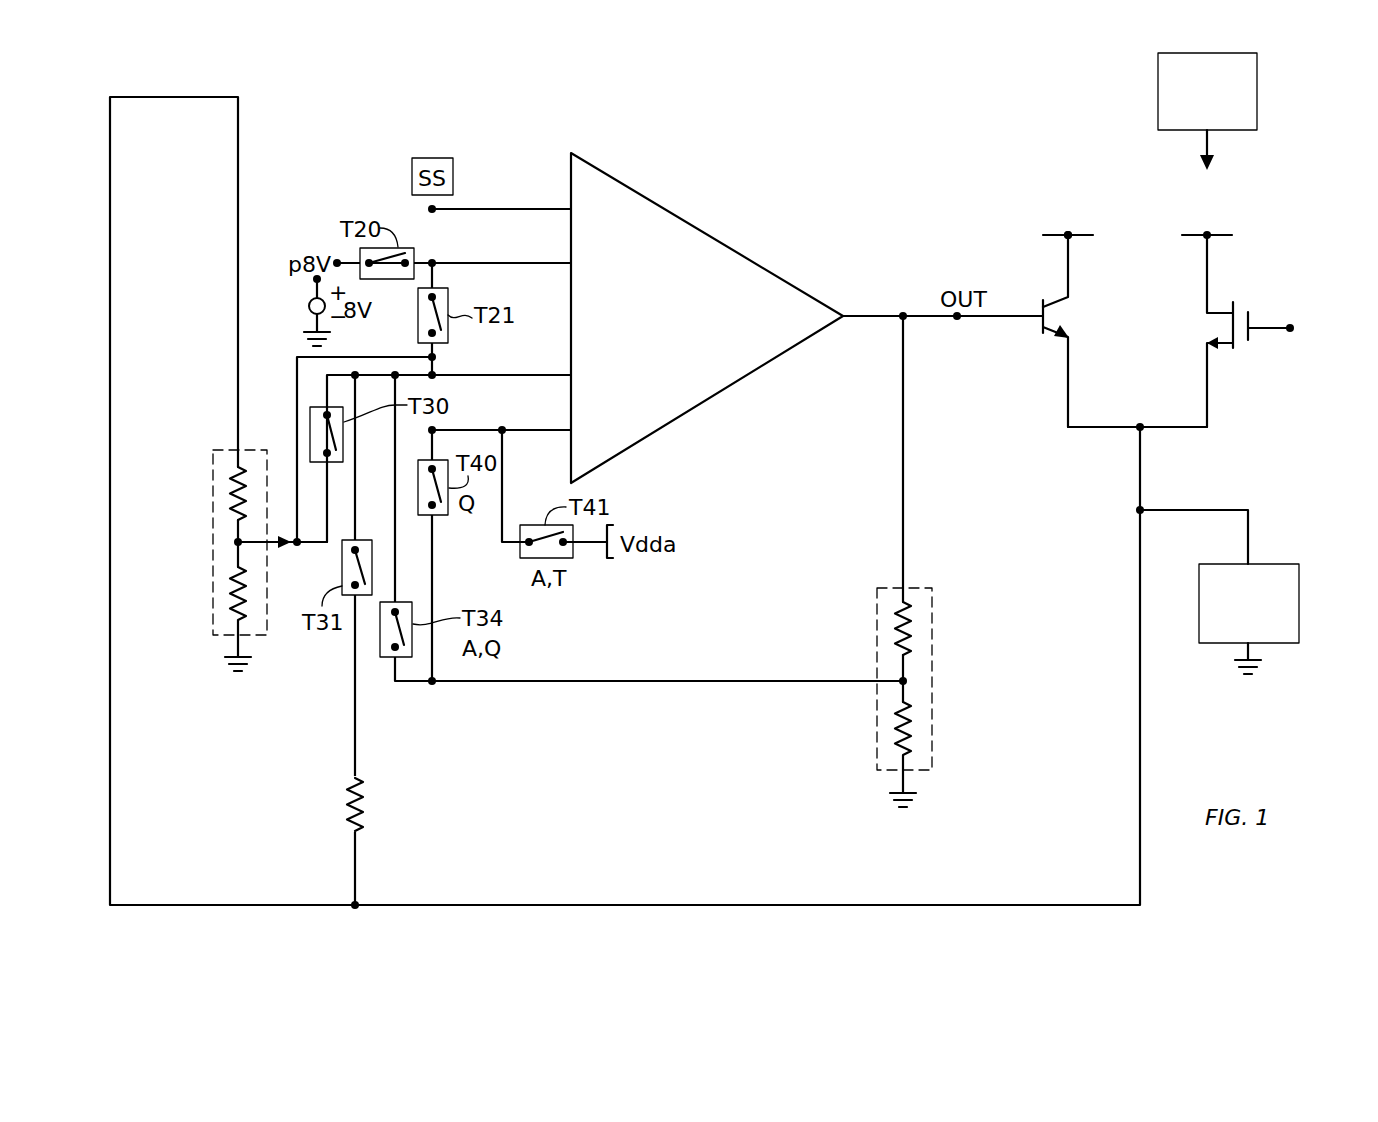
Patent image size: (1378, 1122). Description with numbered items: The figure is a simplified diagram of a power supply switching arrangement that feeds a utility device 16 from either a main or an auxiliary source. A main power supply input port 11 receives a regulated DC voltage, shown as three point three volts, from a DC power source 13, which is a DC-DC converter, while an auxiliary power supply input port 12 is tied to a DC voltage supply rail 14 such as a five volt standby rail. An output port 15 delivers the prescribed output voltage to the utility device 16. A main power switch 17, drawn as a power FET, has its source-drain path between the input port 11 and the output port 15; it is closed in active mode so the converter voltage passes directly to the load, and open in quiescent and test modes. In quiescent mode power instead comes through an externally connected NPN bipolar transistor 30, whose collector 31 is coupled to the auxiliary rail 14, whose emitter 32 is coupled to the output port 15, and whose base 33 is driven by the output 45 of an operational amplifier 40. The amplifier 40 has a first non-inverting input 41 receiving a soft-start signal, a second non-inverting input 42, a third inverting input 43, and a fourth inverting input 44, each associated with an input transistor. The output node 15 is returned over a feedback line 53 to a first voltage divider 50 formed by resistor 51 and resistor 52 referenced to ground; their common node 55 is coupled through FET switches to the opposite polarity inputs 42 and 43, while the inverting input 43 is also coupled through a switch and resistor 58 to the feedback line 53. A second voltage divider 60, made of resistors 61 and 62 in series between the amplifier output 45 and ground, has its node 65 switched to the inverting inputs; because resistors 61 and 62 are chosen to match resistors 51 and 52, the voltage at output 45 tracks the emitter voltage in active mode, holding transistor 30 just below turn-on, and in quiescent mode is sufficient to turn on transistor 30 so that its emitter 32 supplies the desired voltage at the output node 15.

The main power supply input port 11 is at (1215, 237).
The auxiliary power supply input port 12 is at (1061, 238).
The DC power source 13 is at (1258, 118).
The DC voltage supply rail 14 is at (1093, 236).
The output port 15 is at (1138, 433).
The utility device 16 is at (1268, 649).
The main power switch 17 is at (1205, 330).
The NPN bipolar transistor 30 is at (1084, 331).
The collector 31 is at (1070, 276).
The emitter 32 is at (1072, 336).
The base 33 is at (991, 320).
The operational amplifier 40 is at (718, 242).
The first non-inverting input 41 is at (569, 208).
The second non-inverting input 42 is at (569, 266).
The third inverting input 43 is at (569, 375).
The fourth inverting input 44 is at (569, 430).
The amplifier output 45 is at (845, 314).
The first voltage divider 50 is at (213, 477).
The resistor 51 is at (231, 497).
The resistor 52 is at (231, 594).
The feedback line 53 is at (972, 904).
The common node 55 is at (236, 542).
The resistor 58 is at (364, 804).
The second voltage divider 60 is at (934, 620).
The resistor 61 is at (896, 630).
The resistor 62 is at (896, 732).
The node 65 is at (910, 681).